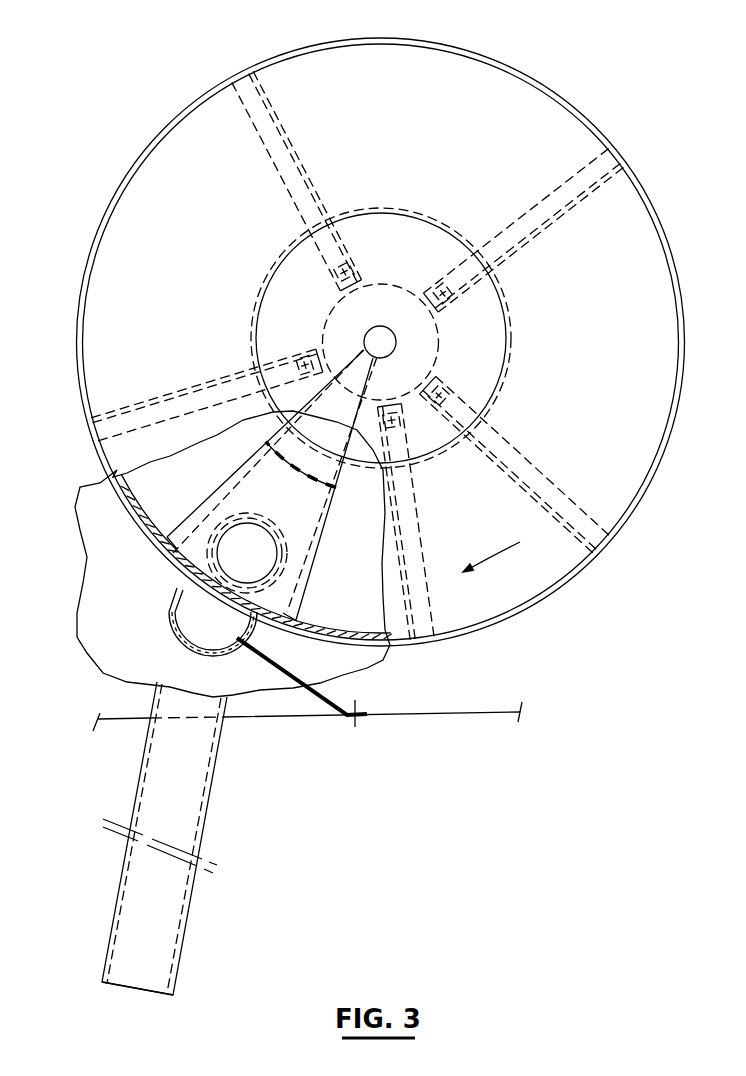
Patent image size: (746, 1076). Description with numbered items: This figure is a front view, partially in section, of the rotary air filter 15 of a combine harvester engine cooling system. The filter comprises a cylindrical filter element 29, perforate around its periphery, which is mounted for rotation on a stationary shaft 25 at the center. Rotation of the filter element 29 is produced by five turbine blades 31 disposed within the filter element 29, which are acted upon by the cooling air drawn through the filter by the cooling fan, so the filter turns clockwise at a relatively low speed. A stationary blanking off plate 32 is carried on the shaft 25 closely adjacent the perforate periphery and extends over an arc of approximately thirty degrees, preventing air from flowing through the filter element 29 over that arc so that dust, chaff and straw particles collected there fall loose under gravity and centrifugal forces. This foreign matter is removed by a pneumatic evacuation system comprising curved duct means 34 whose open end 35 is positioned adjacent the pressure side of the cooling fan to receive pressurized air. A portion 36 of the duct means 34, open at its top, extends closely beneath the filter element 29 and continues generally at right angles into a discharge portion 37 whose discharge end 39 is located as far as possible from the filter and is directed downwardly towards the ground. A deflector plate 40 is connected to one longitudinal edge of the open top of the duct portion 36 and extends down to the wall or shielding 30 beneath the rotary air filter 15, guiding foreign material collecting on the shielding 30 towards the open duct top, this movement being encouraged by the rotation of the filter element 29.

The rotary air filter 15 is at (565, 79).
The stationary shaft 25 is at (383, 351).
The filter element 29 is at (651, 203).
The wall or shielding 30 is at (448, 710).
The turbine blades 31 is at (293, 152).
The blanking off plate 32 is at (170, 560).
The duct means 34 is at (156, 624).
The open end 35 is at (283, 545).
The duct portion 36 is at (176, 651).
The discharge portion 37 is at (212, 787).
The discharge end 39 is at (173, 997).
The deflector plate 40 is at (332, 702).